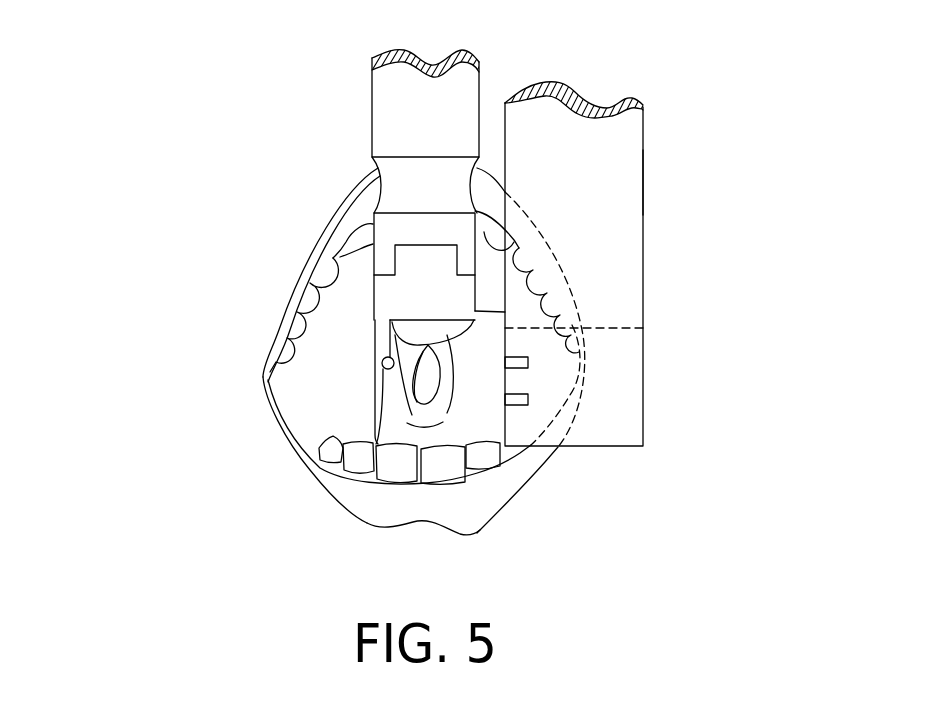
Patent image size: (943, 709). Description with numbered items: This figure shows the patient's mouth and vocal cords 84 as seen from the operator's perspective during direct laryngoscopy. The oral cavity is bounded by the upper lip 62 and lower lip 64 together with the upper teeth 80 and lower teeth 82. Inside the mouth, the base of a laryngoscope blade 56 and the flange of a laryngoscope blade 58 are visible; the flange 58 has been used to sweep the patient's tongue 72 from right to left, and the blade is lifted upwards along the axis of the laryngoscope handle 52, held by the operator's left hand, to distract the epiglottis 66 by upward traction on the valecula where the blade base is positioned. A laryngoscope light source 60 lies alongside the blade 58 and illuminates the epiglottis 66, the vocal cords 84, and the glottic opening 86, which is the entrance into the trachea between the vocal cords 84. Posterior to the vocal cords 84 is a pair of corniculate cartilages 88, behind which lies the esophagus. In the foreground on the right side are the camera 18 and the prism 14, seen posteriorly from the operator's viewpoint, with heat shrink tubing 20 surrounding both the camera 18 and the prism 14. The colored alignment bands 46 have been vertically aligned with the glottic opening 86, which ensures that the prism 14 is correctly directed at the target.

The prism 14 is at (612, 357).
The camera 18 is at (597, 172).
The heat shrink tubing 20 is at (643, 182).
The colored alignment bands 46 is at (528, 363).
The laryngoscope handle 52 is at (413, 113).
The base of a laryngoscope blade 56 is at (392, 297).
The flange of a laryngoscope blade 58 is at (374, 374).
The laryngoscope light source 60 is at (383, 360).
The upper lip 62 is at (453, 510).
The lower lip 64 is at (357, 210).
The epiglottis 66 is at (417, 332).
The tongue 72 is at (320, 352).
The upper teeth 80 is at (335, 450).
The lower teeth 82 is at (357, 243).
The vocal cords 84 is at (418, 400).
The glottic opening 86 is at (427, 382).
The corniculate cartilages 88 is at (440, 405).